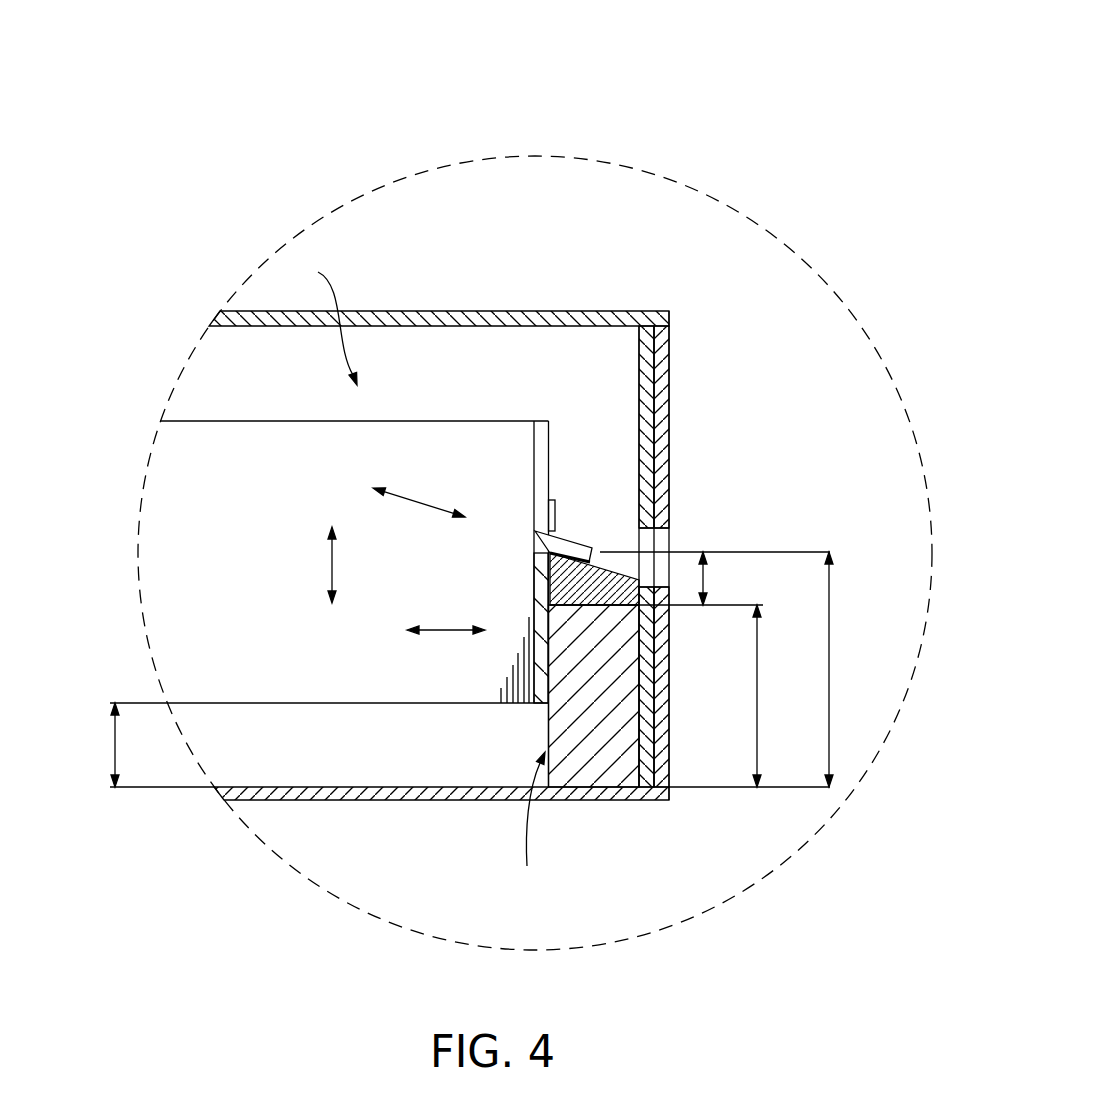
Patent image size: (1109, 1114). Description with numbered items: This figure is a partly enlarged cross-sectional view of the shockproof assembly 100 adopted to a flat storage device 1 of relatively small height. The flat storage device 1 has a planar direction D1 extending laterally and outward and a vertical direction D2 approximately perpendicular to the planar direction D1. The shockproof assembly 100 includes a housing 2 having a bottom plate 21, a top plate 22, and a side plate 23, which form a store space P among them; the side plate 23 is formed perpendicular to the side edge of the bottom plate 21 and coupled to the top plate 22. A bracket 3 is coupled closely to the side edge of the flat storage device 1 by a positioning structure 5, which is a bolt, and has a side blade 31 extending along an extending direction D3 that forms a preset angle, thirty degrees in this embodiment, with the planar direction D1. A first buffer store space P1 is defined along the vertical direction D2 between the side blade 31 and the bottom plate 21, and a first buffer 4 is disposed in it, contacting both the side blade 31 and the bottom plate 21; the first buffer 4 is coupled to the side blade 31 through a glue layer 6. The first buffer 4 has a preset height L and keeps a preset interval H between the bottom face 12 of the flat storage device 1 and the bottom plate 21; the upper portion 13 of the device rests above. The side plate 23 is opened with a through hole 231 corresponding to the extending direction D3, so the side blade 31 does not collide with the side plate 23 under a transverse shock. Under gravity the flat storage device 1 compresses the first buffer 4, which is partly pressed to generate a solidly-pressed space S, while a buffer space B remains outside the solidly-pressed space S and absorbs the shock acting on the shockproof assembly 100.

The shockproof assembly 100 is at (800, 90).
The flat storage device 1 is at (150, 520).
The bottom face 12 is at (426, 705).
The upper lens portion 13 is at (440, 420).
The housing 2 is at (695, 353).
The bottom plate 21 is at (455, 800).
The top plate 22 is at (490, 311).
The side plate 23 is at (663, 731).
The through hole 231 is at (660, 548).
The bracket 3 is at (542, 428).
The side blade 31 is at (588, 547).
The first buffer 4 is at (597, 778).
The positioning structure 5 is at (553, 508).
The glue layer 6 is at (542, 556).
The store space P is at (326, 317).
The first buffer store space P1 is at (522, 826).
The planar direction D1 is at (447, 632).
The vertical direction D2 is at (330, 565).
The extending direction D3 is at (422, 500).
The solidly-pressed space S is at (708, 576).
The buffer space B is at (760, 697).
The preset height L is at (832, 676).
The preset interval H is at (114, 747).